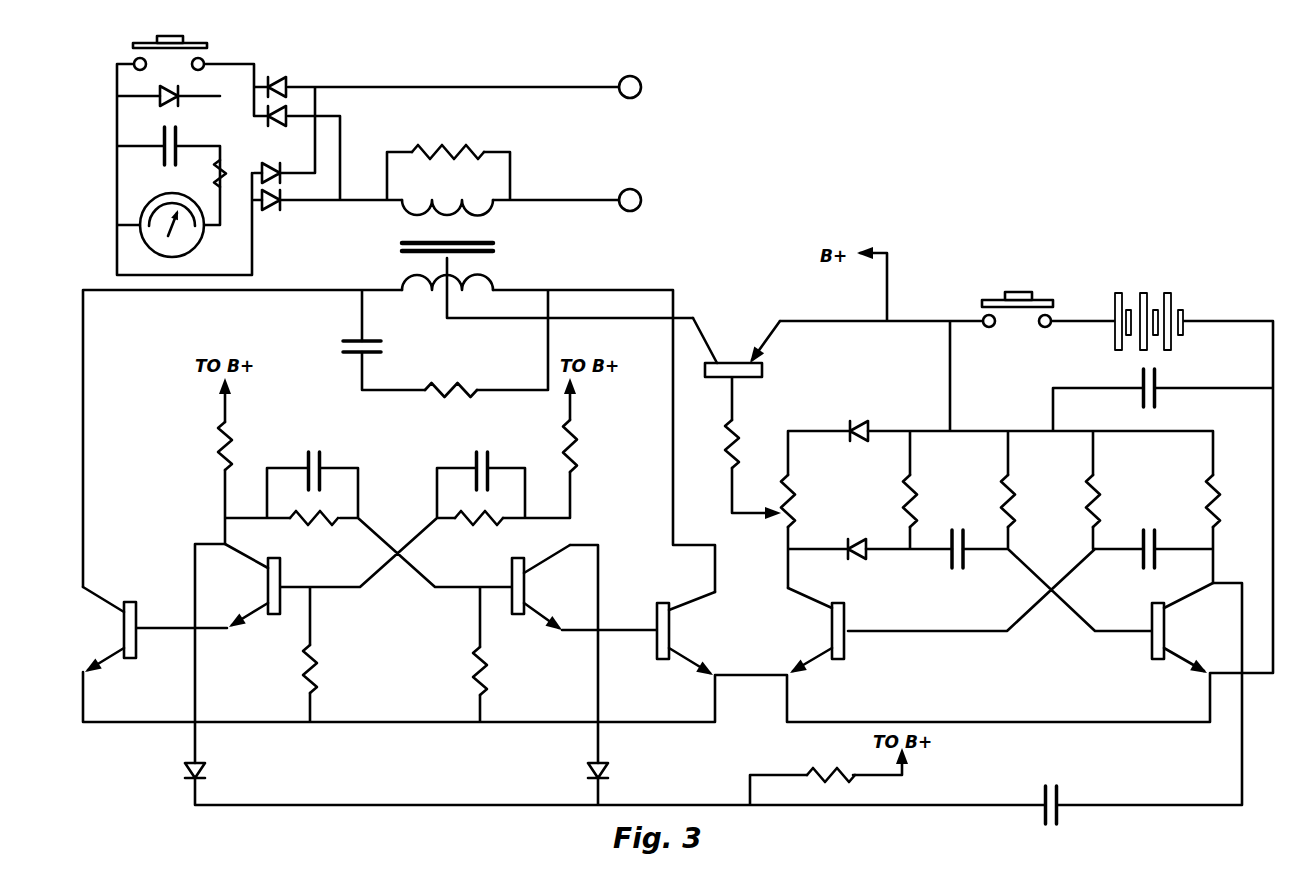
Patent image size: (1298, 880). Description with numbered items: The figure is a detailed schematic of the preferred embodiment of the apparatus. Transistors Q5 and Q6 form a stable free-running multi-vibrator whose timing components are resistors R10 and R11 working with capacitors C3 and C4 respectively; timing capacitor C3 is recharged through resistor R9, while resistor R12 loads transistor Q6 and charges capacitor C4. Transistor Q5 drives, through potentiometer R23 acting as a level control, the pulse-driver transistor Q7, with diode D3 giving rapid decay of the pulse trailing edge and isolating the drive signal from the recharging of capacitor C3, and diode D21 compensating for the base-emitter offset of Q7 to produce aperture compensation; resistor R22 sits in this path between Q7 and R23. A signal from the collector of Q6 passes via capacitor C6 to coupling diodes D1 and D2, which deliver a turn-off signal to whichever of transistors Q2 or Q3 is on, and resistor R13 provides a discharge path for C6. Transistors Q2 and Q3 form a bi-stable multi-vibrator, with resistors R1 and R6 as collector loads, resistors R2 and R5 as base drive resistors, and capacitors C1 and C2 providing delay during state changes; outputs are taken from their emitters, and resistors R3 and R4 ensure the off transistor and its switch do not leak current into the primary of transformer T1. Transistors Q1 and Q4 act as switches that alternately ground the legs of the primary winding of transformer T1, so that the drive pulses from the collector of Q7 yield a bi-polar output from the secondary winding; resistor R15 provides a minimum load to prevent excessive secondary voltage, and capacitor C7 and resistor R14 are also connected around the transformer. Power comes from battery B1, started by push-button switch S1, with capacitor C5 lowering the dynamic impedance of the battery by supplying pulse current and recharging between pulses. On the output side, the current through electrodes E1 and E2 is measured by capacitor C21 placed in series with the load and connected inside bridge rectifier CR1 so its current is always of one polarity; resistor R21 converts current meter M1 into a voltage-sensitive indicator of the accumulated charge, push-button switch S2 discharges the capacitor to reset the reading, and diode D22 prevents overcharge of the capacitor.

The push-button switch S2 is at (153, 53).
The diode D22 is at (149, 111).
The capacitor C21 is at (168, 157).
The current meter M1 is at (184, 229).
The resistor R21 is at (231, 201).
The bridge rectifier CR1 is at (271, 143).
The resistor R15 is at (448, 139).
The electrode E2 is at (647, 87).
The electrode E1 is at (647, 200).
The transformer T1 is at (464, 245).
The capacitor C7 is at (343, 352).
The resistor R14 is at (451, 378).
The push-button switch S1 is at (1017, 298).
The battery B1 is at (1149, 309).
The capacitor C5 is at (1149, 401).
The transistor Q7 is at (736, 360).
The resistor R22 is at (709, 444).
The diode D21 is at (862, 417).
The potentiometer R23 is at (813, 501).
The resistor R9 is at (931, 501).
The resistor R10 is at (1031, 501).
The resistor R11 is at (1115, 501).
The resistor R12 is at (1234, 501).
The diode D3 is at (853, 563).
The capacitor C3 is at (955, 564).
The capacitor C4 is at (1141, 564).
The transistor Q5 is at (816, 639).
The transistor Q6 is at (1176, 637).
The resistor R13 is at (831, 763).
The capacitor C6 is at (1050, 794).
The resistor R1 is at (207, 446).
The capacitor C1 is at (317, 458).
The resistor R2 is at (314, 532).
The transistor Q1 is at (112, 628).
The transistor Q2 is at (253, 594).
The resistor R3 is at (329, 669).
The resistor R4 is at (462, 671).
The transistor Q3 is at (536, 596).
The resistor R5 is at (479, 532).
The capacitor C2 is at (479, 458).
The resistor R6 is at (590, 446).
The transistor Q4 is at (683, 627).
The coupling diode D1 is at (211, 774).
The coupling diode D2 is at (576, 774).